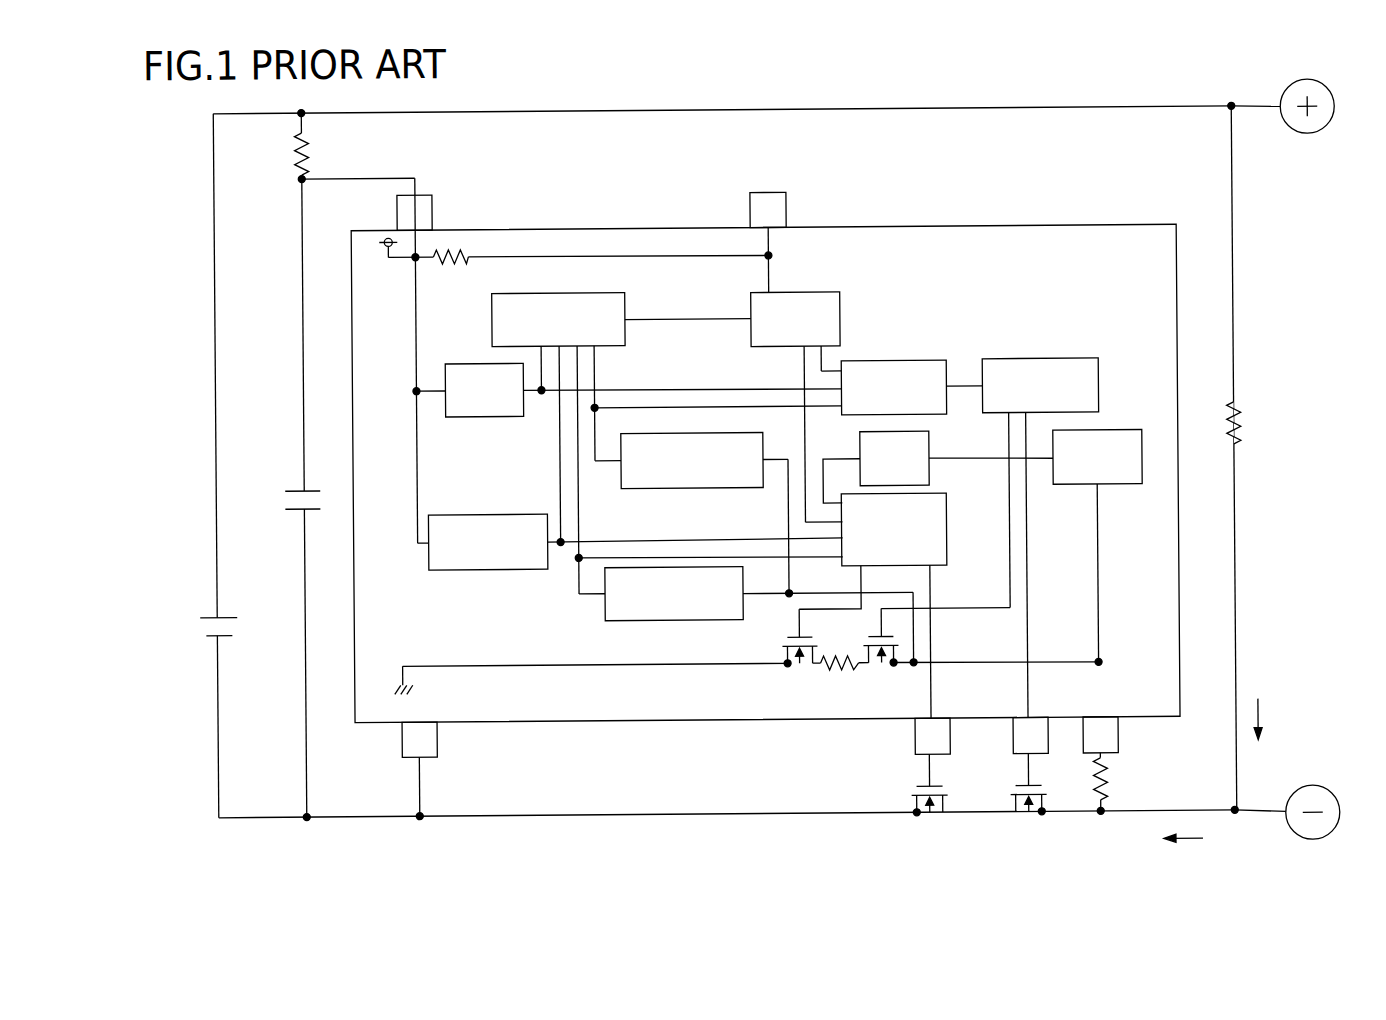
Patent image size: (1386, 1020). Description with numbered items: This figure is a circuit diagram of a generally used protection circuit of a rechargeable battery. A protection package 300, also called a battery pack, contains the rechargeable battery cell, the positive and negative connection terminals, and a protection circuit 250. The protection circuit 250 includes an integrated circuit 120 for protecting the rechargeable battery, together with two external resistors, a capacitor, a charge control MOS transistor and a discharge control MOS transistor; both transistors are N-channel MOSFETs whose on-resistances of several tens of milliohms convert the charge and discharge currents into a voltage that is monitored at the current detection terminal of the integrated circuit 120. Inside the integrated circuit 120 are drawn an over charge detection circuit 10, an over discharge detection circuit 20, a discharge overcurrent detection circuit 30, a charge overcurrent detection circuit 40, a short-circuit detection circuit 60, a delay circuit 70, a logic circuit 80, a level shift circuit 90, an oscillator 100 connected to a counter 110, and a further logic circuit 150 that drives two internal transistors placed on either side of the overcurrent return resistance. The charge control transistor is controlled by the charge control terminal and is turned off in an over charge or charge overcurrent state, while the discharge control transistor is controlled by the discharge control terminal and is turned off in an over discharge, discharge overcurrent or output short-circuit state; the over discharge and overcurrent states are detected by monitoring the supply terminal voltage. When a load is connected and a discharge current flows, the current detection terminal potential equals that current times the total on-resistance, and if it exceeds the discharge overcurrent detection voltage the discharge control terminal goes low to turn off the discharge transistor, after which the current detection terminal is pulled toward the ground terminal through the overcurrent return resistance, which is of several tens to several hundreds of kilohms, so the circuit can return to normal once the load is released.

The over charge detection circuit 10 is at (490, 416).
The over discharge detection circuit 20 is at (490, 569).
The discharge overcurrent detection circuit 30 is at (640, 621).
The charge overcurrent detection circuit 40 is at (658, 488).
The short-circuit detection circuit 60 is at (1113, 488).
The delay circuit 70 is at (930, 447).
The logic circuit 80 is at (913, 362).
The level shift circuit 90 is at (1026, 361).
The oscillator 100 is at (557, 292).
The counter 110 is at (798, 293).
The integrated circuit 120 is at (859, 228).
The logic circuit 150 is at (948, 508).
The protection circuit 250 is at (860, 140).
The protection package 300 is at (801, 86).